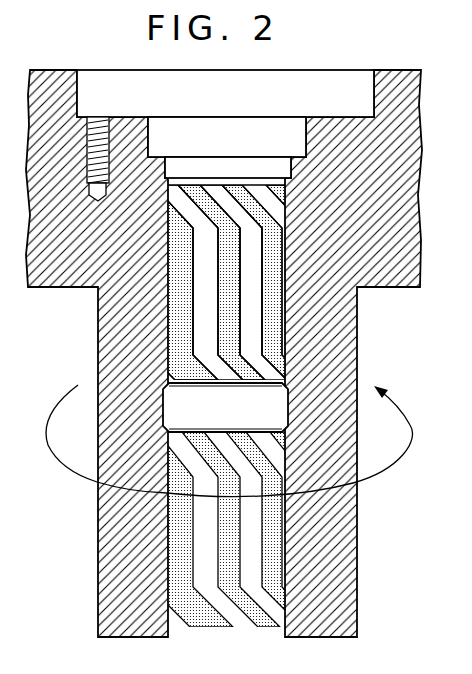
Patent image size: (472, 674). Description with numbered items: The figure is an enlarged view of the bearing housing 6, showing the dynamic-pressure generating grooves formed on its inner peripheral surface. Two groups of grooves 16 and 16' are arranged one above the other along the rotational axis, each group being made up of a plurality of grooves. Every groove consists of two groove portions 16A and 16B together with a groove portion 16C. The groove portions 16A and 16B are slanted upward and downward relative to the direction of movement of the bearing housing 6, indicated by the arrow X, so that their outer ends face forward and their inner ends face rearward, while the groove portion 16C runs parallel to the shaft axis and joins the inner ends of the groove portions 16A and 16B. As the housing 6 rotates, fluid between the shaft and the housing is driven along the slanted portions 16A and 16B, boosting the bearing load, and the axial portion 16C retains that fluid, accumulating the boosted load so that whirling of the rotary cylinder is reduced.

The bearing housing 6 is at (285, 326).
The group of grooves 16 is at (206, 282).
The group of grooves 16' is at (209, 529).
The groove portion 16A is at (286, 184).
The groove portion 16B is at (204, 350).
The groove portion 16C is at (272, 272).
The arrow X is at (397, 467).